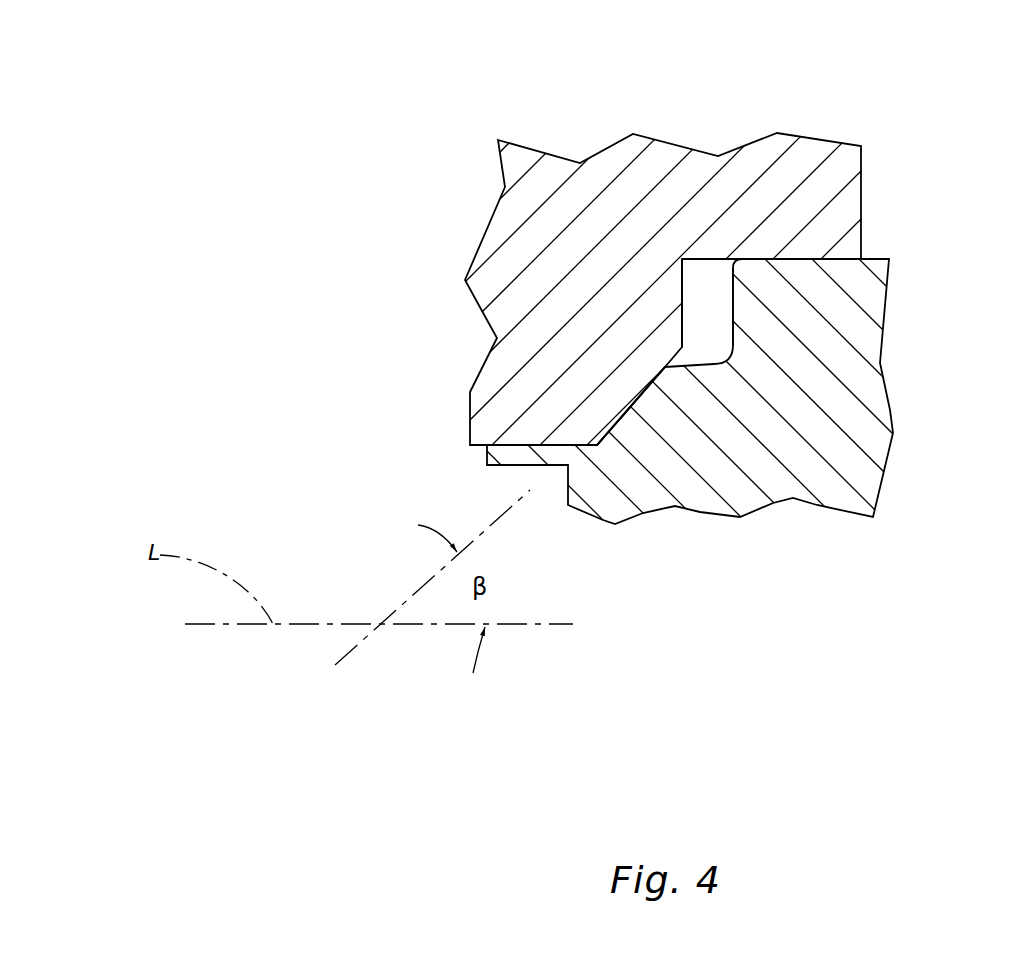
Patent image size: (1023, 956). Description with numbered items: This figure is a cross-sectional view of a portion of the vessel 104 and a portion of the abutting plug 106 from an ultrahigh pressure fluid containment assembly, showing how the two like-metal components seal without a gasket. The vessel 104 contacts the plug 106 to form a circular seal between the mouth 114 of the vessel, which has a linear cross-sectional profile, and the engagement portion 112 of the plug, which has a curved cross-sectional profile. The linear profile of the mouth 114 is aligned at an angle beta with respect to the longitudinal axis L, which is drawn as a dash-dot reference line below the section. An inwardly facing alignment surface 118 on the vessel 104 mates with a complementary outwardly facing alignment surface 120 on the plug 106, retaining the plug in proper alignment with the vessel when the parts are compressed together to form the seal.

The vessel 104 is at (550, 153).
The plug 106 is at (890, 410).
The engagement portion 112 is at (663, 363).
The mouth 114 is at (648, 388).
The inwardly facing alignment surface 118 is at (722, 260).
The outwardly facing alignment surface 120 is at (873, 258).